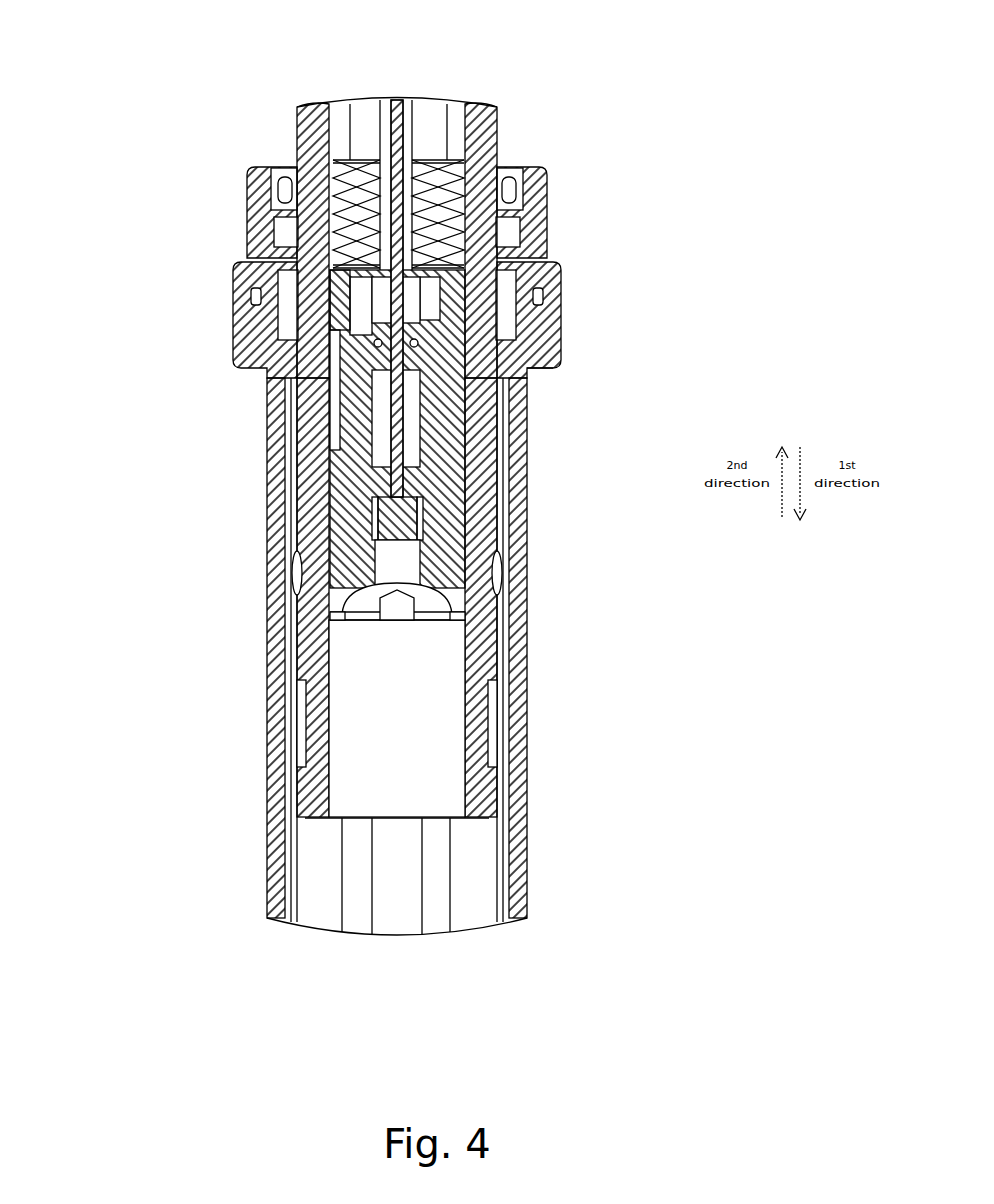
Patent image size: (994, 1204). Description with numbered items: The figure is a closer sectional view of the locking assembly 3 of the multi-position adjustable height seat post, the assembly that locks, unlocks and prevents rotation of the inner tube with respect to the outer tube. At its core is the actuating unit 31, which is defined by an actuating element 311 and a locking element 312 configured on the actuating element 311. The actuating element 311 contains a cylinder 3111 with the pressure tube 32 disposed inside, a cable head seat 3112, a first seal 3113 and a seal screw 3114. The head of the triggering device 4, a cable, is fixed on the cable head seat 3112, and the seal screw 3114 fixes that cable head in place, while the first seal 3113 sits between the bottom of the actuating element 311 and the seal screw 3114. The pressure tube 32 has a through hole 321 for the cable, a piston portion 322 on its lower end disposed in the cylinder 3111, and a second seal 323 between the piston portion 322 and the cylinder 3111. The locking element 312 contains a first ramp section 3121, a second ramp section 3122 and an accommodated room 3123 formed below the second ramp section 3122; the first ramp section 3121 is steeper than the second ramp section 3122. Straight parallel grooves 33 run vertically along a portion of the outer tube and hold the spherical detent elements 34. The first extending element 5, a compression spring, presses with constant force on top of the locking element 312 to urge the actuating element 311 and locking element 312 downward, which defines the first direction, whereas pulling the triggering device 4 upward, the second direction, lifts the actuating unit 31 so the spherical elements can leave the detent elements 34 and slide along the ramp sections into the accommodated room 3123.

The locking assembly 3 is at (468, 326).
The actuating unit 31 is at (468, 272).
The actuating element 311 is at (395, 333).
The cylinder 3111 is at (417, 437).
The cable head seat 3112 is at (412, 490).
The first seal 3113 is at (432, 588).
The seal screw 3114 is at (425, 612).
The locking element 312 is at (520, 212).
The first ramp section 3121 is at (330, 348).
The second ramp section 3122 is at (340, 390).
The accommodated room 3123 is at (340, 420).
The pressure tube 32 is at (408, 100).
The through hole 321 is at (432, 103).
The piston portion 322 is at (537, 378).
The second seal 323 is at (420, 344).
The straight parallel grooves 33 is at (433, 863).
The spherical detent elements 34 is at (272, 580).
The triggering device 4 is at (397, 103).
The first extending element 5 is at (333, 160).